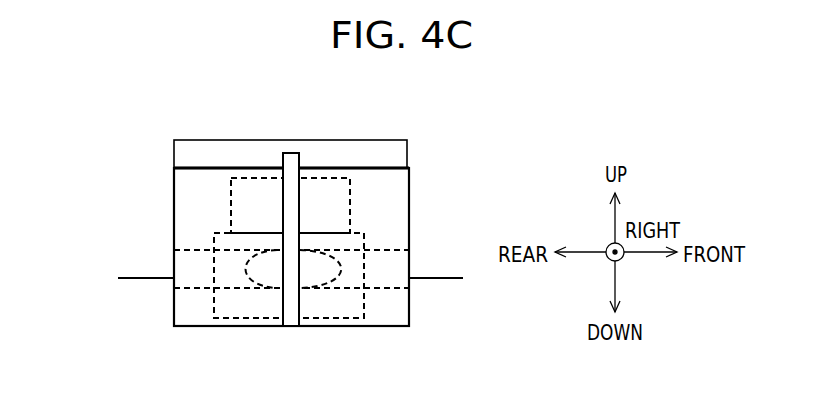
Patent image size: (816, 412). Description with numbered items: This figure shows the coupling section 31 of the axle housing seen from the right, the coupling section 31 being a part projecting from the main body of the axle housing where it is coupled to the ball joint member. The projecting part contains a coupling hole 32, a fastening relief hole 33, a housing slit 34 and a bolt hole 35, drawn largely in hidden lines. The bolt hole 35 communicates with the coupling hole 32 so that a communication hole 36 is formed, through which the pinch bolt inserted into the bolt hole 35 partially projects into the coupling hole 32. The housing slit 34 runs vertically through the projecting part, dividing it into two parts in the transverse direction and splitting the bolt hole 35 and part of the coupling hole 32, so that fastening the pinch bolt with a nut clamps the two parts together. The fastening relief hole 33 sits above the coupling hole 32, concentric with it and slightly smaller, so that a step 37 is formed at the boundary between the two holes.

The coupling section 31 is at (306, 202).
The coupling hole 32 is at (353, 318).
The fastening relief hole 33 is at (345, 212).
The housing slit 34 is at (294, 157).
The bolt hole 35 is at (190, 270).
The communication hole 36 is at (263, 266).
The step 37 is at (368, 237).